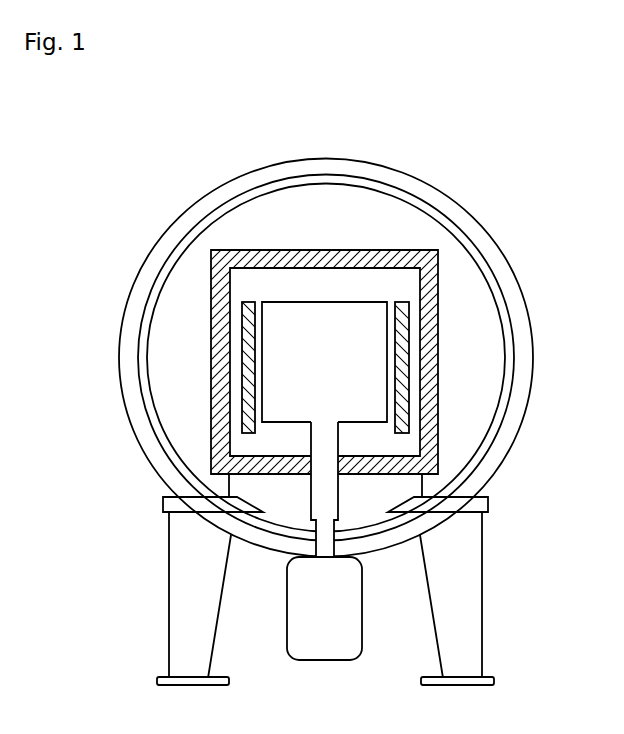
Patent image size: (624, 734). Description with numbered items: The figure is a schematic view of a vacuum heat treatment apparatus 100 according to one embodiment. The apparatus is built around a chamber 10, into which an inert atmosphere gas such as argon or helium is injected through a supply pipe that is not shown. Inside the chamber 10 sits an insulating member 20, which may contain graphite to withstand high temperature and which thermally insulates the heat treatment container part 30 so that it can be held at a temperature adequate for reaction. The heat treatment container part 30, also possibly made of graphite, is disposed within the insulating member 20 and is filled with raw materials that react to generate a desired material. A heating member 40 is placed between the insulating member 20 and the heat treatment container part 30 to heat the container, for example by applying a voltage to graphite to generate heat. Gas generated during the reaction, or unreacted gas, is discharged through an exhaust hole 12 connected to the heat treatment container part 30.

The vacuum heat treatment apparatus 100 is at (119, 106).
The chamber 10 is at (383, 171).
The exhaust hole 12 is at (317, 441).
The insulating member 20 is at (407, 250).
The heat treatment container part 30 is at (375, 397).
The heating member 40 is at (408, 376).